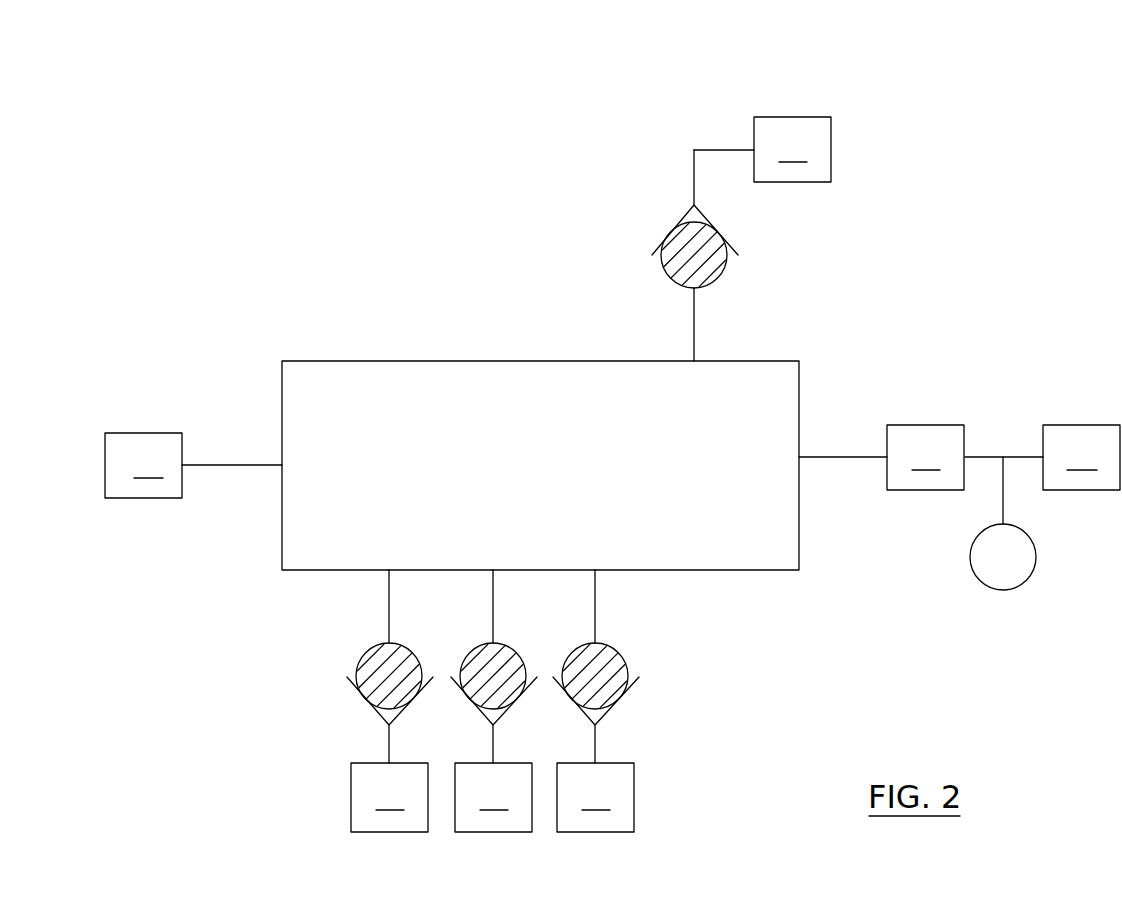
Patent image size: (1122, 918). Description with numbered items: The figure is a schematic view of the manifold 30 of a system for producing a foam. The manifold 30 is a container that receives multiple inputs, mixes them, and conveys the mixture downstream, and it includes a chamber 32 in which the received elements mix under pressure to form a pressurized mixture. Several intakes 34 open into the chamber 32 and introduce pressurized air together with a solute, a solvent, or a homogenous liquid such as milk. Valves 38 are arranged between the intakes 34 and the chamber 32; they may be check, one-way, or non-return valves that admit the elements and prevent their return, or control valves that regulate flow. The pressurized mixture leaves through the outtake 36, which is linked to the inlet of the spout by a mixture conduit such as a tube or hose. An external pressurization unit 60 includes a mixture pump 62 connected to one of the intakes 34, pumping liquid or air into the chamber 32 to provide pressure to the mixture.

The manifold 30 is at (130, 112).
The chamber 32 is at (760, 570).
The intakes 34 is at (657, 474).
The outtake 36 is at (193, 465).
The valves 38 is at (718, 278).
The pressurization unit 60 is at (1042, 457).
The mixture pump 62 is at (1000, 591).